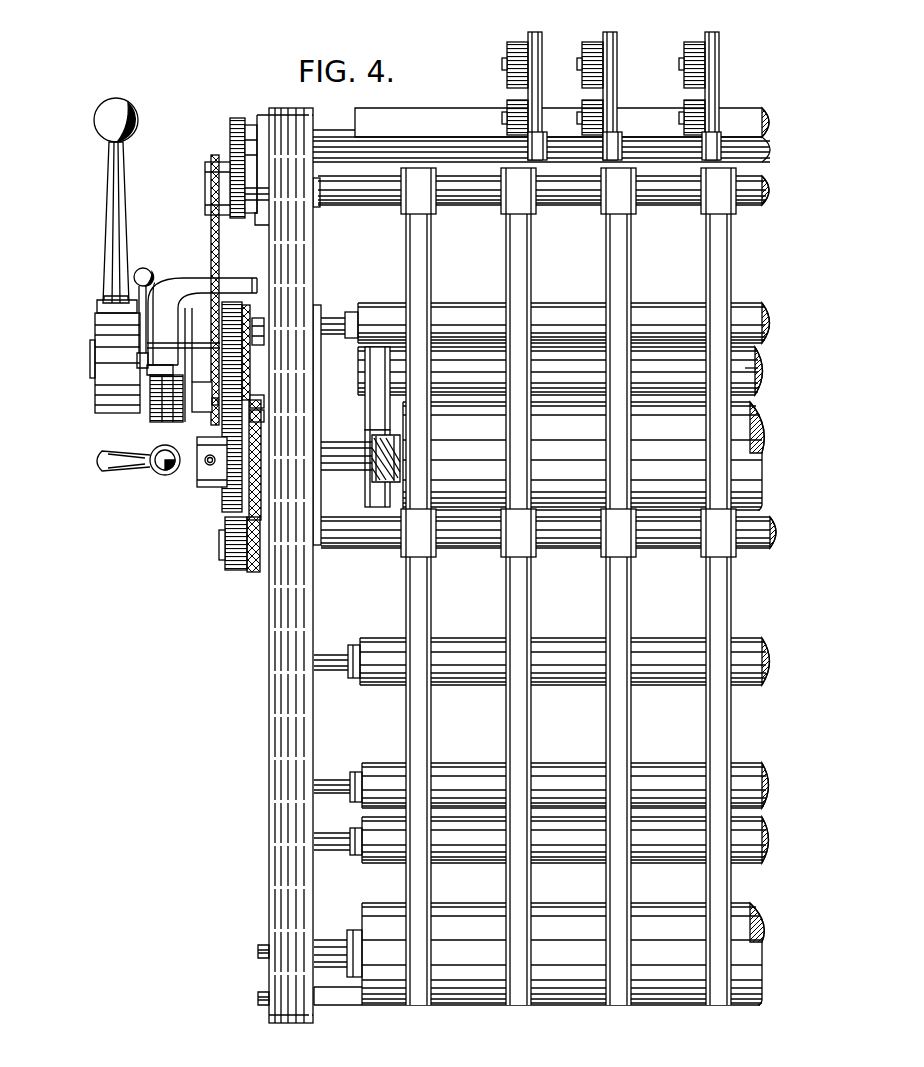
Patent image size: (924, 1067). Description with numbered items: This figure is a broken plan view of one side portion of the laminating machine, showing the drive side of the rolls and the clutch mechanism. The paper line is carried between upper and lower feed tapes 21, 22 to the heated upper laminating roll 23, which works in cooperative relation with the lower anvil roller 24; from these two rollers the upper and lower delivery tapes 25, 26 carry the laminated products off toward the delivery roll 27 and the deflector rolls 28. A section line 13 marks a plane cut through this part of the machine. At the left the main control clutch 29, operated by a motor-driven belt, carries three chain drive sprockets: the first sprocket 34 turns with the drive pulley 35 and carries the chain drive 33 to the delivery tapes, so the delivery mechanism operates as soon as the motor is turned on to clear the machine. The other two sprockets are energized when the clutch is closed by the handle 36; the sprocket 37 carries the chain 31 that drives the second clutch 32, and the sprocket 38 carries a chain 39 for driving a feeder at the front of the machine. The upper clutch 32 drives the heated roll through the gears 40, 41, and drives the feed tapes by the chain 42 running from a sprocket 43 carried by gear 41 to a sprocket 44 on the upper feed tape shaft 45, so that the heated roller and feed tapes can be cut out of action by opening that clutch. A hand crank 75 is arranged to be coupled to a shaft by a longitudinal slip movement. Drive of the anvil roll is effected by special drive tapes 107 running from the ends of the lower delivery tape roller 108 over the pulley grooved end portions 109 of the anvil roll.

The section line 13- 13 is at (110, 459).
The upper feed tape 21 is at (510, 601).
The lower feed tape 22 is at (515, 886).
The heated upper laminating roll 23 is at (603, 447).
The lower anvil roller 24 is at (362, 427).
The upper delivery tape 25 is at (510, 250).
The lower delivery tape 26 is at (513, 392).
The delivery roll 27 is at (414, 126).
The deflector rolls 28 is at (590, 105).
The main control clutch 29 is at (95, 323).
The chain 31 is at (264, 332).
The clutch 32 is at (150, 280).
The chain drive 33 is at (219, 258).
The chain drive sprocket 34 is at (203, 410).
The drive pulley 35 is at (152, 423).
The handle 36 is at (116, 198).
The drive sprocket 37 is at (245, 303).
The drive sprocket 38 is at (264, 402).
The chain 39 is at (264, 414).
The gear 40 is at (250, 357).
The gear 41 is at (224, 498).
The chain 42 is at (252, 505).
The sprocket 43 is at (258, 458).
The sprocket 44 is at (249, 570).
The upper feed tape shaft 45 is at (352, 540).
The hand crank 75 is at (166, 472).
The drive tapes 107 is at (376, 398).
The lower delivery tape roller 108 is at (746, 368).
The pulley grooved end portions 109 is at (386, 500).